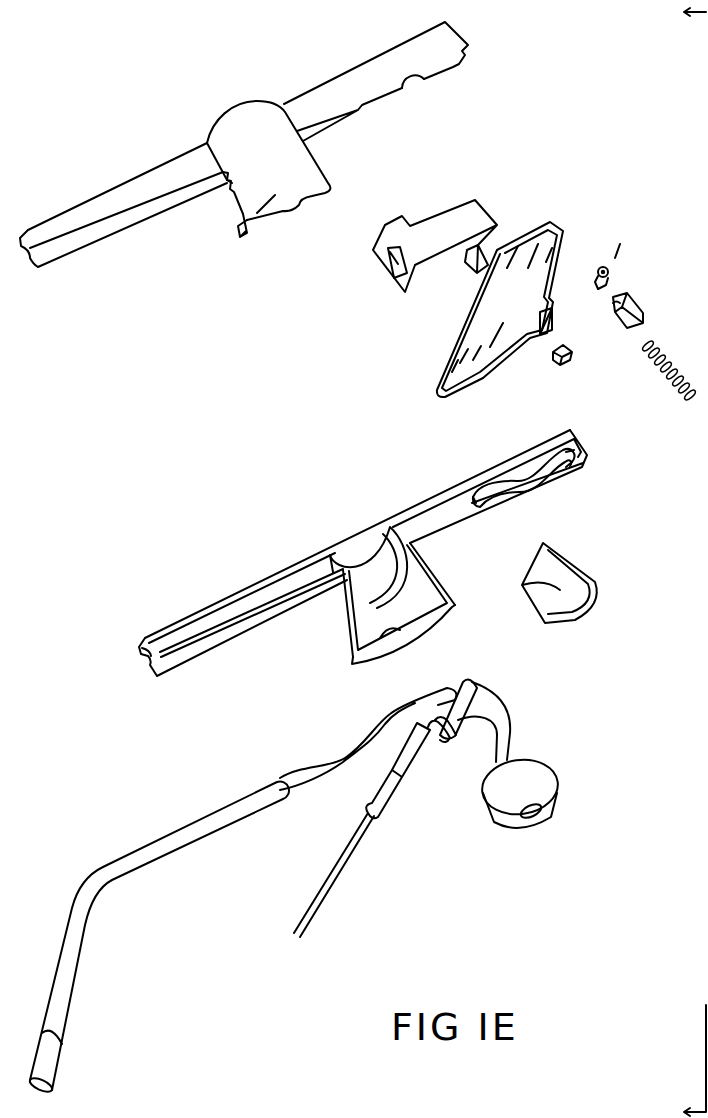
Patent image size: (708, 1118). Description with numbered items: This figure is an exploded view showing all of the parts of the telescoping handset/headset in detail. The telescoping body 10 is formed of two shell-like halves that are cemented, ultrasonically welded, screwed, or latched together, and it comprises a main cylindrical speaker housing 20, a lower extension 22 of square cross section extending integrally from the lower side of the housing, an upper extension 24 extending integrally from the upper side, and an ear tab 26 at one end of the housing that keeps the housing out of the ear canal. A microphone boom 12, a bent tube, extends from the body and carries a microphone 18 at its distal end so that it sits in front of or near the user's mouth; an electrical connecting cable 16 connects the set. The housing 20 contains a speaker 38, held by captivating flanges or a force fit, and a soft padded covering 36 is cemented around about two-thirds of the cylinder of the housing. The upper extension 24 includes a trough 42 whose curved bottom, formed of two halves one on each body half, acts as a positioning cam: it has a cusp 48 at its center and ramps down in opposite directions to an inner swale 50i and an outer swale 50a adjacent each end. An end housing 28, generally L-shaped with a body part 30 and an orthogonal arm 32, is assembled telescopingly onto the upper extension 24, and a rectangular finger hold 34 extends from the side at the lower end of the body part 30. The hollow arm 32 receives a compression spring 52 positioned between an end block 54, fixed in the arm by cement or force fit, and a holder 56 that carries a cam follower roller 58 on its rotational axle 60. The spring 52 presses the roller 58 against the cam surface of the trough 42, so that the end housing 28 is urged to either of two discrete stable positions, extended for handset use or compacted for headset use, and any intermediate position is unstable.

The telescoping body 10 is at (243, 124).
The microphone boom 12 is at (156, 858).
The electrical connecting cable 16 is at (343, 862).
The microphone 18 is at (48, 1058).
The main cylindrical speaker housing 20 is at (220, 133).
The lower extension 22 is at (108, 198).
The upper extension 24 is at (337, 83).
The ear tab 26 is at (243, 233).
The end housing 28 is at (457, 224).
The body part 30 is at (497, 242).
The orthogonal arm 32 is at (470, 270).
The rectangular finger hold 34 is at (395, 228).
The soft padded covering 36 is at (576, 561).
The speaker 38 is at (545, 770).
The trough 42 is at (437, 70).
The cusp 48 is at (527, 485).
The outer clip end 50a is at (584, 447).
The inner swale 50i is at (480, 512).
The compression spring 52 is at (668, 378).
The end block 54 is at (565, 362).
The holder 56 is at (645, 299).
The cam follower roller 58 is at (600, 268).
The rotational axle 60 is at (622, 253).